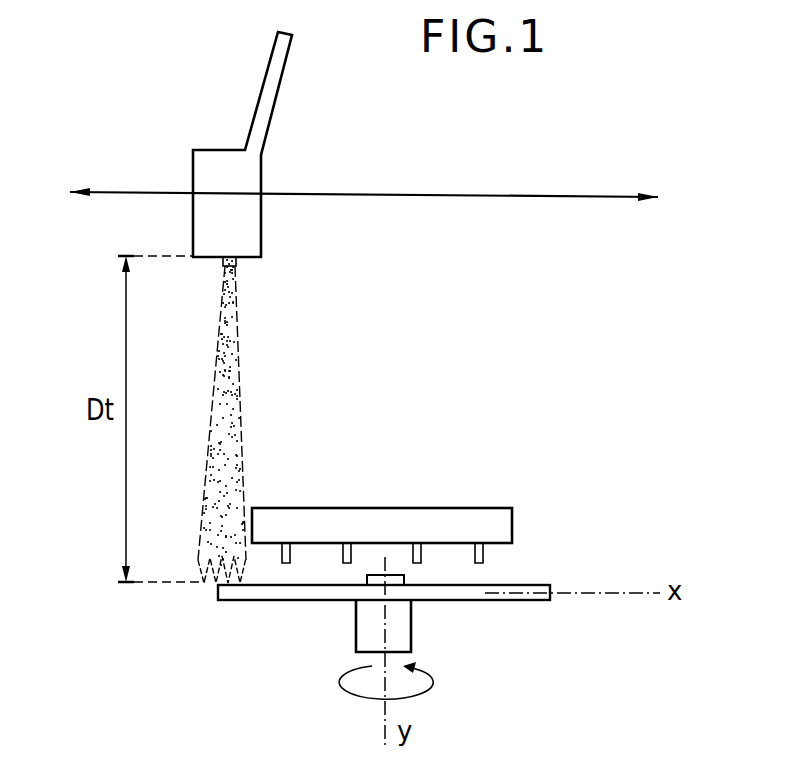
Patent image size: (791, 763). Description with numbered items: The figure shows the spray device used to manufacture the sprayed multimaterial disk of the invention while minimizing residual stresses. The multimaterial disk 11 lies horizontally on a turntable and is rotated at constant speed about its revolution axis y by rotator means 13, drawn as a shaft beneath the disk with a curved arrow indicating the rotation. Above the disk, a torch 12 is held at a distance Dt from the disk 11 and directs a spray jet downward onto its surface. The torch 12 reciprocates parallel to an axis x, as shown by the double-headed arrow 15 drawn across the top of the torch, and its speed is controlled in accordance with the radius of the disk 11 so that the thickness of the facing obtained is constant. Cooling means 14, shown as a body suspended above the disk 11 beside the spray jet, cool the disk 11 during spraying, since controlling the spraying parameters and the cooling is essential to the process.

The multimaterial disk 11 is at (452, 593).
The torch 12 is at (221, 165).
The rotator means 13 is at (368, 627).
The cooling means 14 is at (390, 520).
The double-headed arrow 15 is at (347, 196).